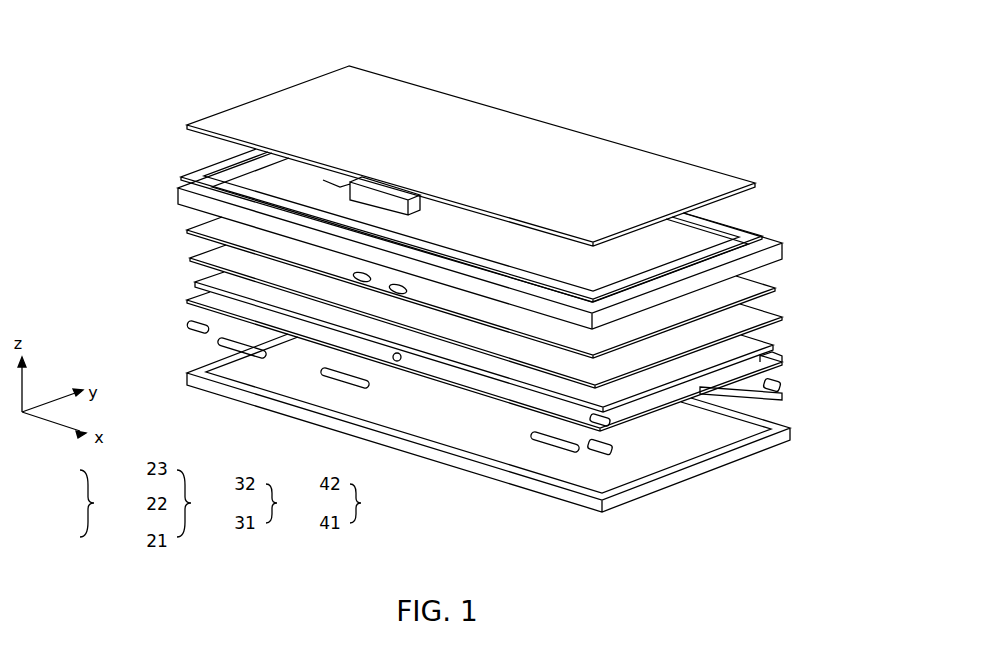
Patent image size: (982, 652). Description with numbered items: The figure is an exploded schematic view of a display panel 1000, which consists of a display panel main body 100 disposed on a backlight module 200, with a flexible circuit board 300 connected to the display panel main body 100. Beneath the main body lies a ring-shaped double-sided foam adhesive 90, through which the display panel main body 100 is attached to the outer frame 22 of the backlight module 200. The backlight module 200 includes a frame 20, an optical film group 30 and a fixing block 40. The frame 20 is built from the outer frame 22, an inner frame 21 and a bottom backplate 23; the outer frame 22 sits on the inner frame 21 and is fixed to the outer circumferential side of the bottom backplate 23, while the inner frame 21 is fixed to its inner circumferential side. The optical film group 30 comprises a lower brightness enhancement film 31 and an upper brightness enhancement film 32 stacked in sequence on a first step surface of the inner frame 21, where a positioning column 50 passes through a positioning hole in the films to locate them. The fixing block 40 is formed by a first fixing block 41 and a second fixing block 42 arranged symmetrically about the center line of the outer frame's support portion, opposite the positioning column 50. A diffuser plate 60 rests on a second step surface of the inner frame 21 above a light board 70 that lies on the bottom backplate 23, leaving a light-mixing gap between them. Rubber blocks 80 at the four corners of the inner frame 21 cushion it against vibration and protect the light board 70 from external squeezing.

The display panel 1000 is at (283, 75).
The display panel main body 100 is at (670, 170).
The backlight module 200 is at (178, 245).
The flexible circuit board 300 is at (380, 185).
The ring-shaped double-sided foam adhesive 90 is at (752, 240).
The frame 20 is at (133, 486).
The outer frame 22 is at (784, 248).
The bottom backplate 23 is at (792, 440).
The inner frame 21 is at (782, 360).
The optical film group 30 is at (177, 504).
The upper brightness enhancement film 32 is at (760, 288).
The lower brightness enhancement film 31 is at (765, 318).
The diffuser plate 60 is at (765, 348).
The fixing block 40 is at (219, 522).
The first fixing block 41 is at (397, 289).
The second fixing block 42 is at (268, 350).
The positioning column 50 is at (400, 360).
The light board 70 is at (784, 395).
The rubber blocks 80 is at (784, 384).